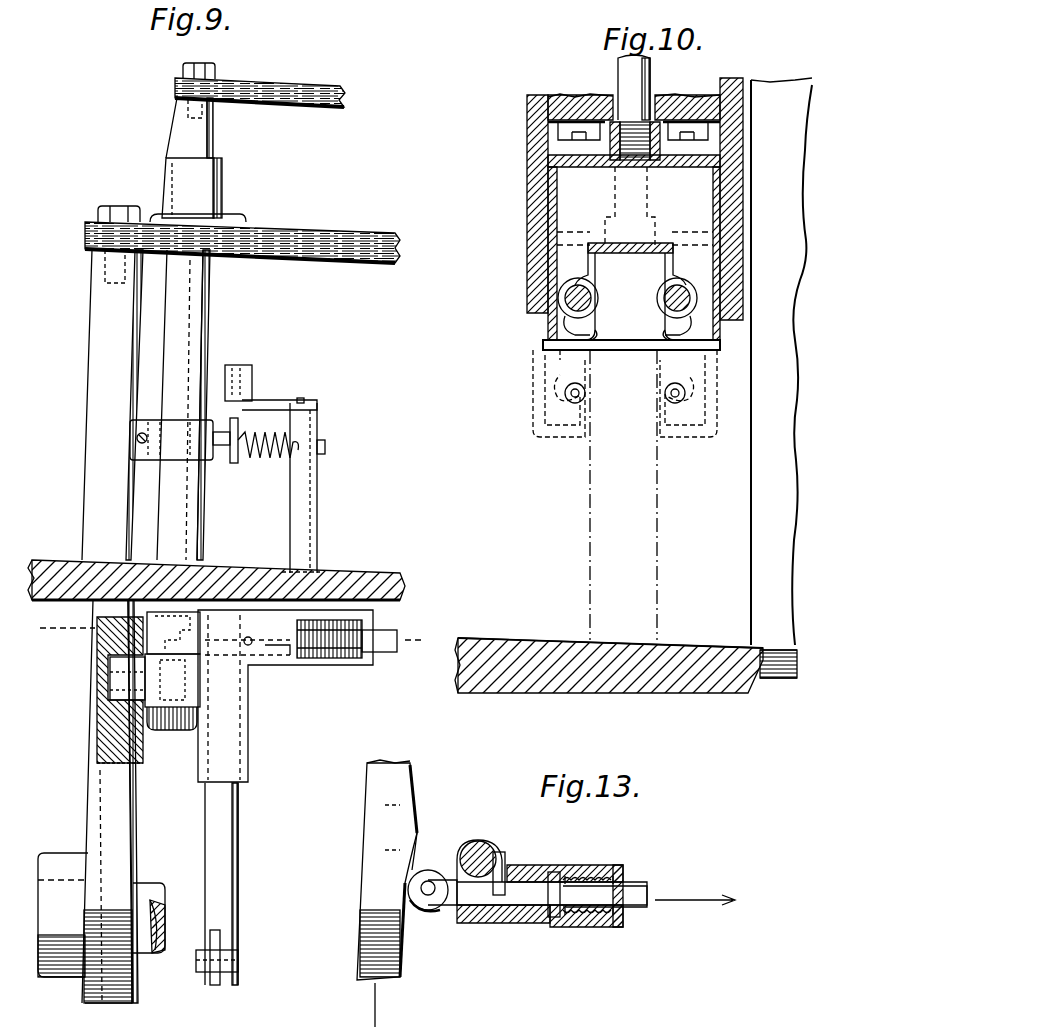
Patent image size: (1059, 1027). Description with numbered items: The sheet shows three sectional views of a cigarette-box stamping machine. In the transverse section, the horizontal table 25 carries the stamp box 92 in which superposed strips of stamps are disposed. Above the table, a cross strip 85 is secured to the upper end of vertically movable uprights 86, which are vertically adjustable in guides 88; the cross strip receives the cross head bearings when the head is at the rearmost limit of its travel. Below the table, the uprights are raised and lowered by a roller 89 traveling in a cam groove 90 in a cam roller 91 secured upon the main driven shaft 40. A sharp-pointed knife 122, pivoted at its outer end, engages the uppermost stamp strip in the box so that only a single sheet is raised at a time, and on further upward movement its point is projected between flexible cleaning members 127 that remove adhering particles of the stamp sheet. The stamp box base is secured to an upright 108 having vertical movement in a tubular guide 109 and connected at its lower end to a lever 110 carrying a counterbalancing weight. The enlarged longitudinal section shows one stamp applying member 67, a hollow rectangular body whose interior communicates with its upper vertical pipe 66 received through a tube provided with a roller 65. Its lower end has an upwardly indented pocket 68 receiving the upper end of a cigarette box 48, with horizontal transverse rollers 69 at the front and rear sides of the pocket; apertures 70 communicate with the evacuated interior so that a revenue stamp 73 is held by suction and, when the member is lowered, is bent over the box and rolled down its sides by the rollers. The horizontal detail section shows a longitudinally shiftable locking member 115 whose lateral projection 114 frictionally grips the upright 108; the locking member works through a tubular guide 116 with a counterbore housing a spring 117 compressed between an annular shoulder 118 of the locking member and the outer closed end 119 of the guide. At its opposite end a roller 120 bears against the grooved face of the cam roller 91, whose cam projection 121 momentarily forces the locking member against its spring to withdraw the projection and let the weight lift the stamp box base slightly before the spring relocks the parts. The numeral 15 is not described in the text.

In FIG. 9, the cross strip 85 is at (298, 92).
In FIG. 9, the vertically movable uprights 86 is at (198, 141).
In FIG. 9, the guides 88 is at (224, 192).
In FIG. 9, the flexible cleaning members 127 is at (246, 368).
In FIG. 9, the stamp box 92 is at (265, 532).
In FIG. 9, the knife 122 is at (226, 462).
In FIG. 9, the table 25 is at (58, 565).
In FIG. 9, the base frame 15 is at (230, 632).
In FIG. 9, the roller 120 is at (147, 632).
In FIG. 13, the roller 120 is at (440, 912).
In FIG. 9, the roller 89 is at (118, 680).
In FIG. 9, the cam groove 90 is at (120, 712).
In FIG. 9, the cam roller 91 is at (108, 800).
In FIG. 13, the cam roller 91 is at (370, 866).
In FIG. 9, the main driven shaft 40 is at (152, 892).
In FIG. 9, the upright 108 is at (222, 843).
In FIG. 13, the upright 108 is at (473, 847).
In FIG. 9, the lever 110 is at (235, 945).
In FIG. 9, the tubular guide 109 is at (232, 750).
In FIG. 9, the tubular guide 116 is at (350, 668).
In FIG. 13, the tubular guide 116 is at (498, 923).
In FIG. 9, the locking member 115 is at (398, 635).
In FIG. 13, the locking member 115 is at (538, 923).
In FIG. 10, the vertical pipe 66 is at (640, 82).
In FIG. 10, the roller 65 is at (537, 145).
In FIG. 10, the stamp applying member 67 is at (567, 205).
In FIG. 10, the pocket 68 is at (642, 265).
In FIG. 10, the rollers 69 is at (660, 303).
In FIG. 10, the apertures 70 is at (560, 345).
In FIG. 10, the revenue stamp 73 is at (642, 355).
In FIG. 10, the cigarette box 48 is at (600, 530).
In FIG. 13, the cam projection 121 is at (415, 830).
In FIG. 13, the lateral projection 114 is at (505, 862).
In FIG. 13, the spring 117 is at (612, 870).
In FIG. 13, the annular shoulder 118 is at (588, 916).
In FIG. 13, the outer closed end 119 is at (687, 922).